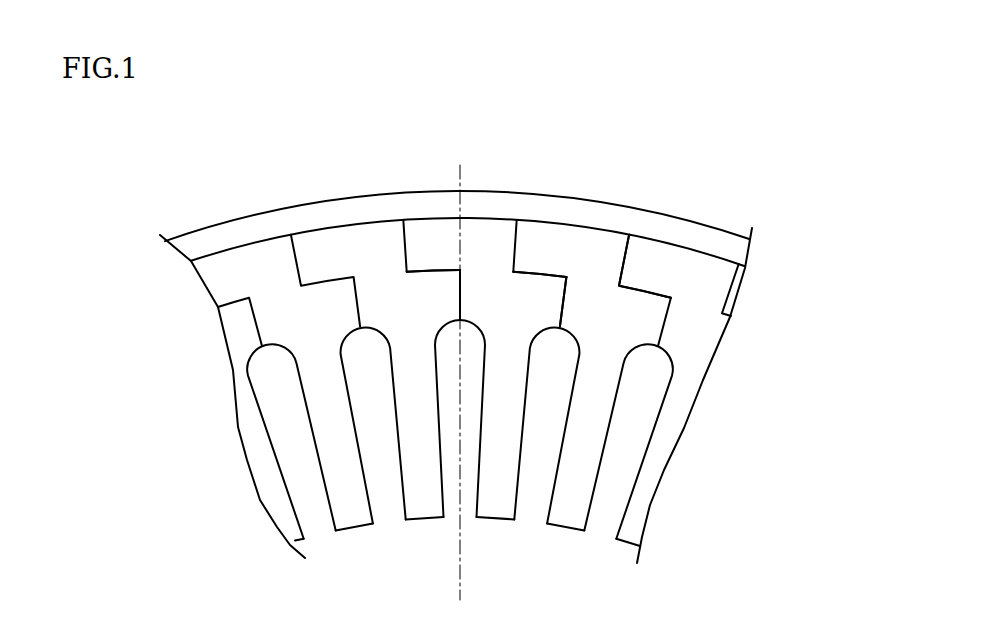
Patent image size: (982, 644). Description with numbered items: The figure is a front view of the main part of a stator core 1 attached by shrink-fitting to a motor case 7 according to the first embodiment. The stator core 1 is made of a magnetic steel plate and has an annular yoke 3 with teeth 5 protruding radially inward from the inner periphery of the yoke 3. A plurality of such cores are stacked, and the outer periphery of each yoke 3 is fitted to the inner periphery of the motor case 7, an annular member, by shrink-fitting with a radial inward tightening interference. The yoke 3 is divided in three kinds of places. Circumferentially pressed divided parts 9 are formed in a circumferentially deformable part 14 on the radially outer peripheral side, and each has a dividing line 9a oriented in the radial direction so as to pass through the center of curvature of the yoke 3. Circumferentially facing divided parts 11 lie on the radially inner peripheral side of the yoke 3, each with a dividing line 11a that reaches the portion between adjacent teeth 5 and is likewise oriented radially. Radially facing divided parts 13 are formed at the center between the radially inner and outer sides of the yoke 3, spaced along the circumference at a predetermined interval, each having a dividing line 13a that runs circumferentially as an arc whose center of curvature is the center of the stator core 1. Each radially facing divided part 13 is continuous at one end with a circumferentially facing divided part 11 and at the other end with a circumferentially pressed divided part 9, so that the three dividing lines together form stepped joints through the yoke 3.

The stator core 1 is at (510, 215).
The annular yoke 3 is at (707, 273).
The teeth 5 is at (427, 517).
The motor case 7 is at (550, 208).
The circumferentially pressed divided parts 9 is at (405, 243).
The dividing line 9a is at (442, 263).
The circumferentially facing divided parts 11 is at (457, 300).
The dividing line 11a is at (462, 290).
The radially facing divided parts 13 is at (427, 267).
The dividing line 13a is at (410, 256).
The circumferentially deformable part 14 is at (653, 253).